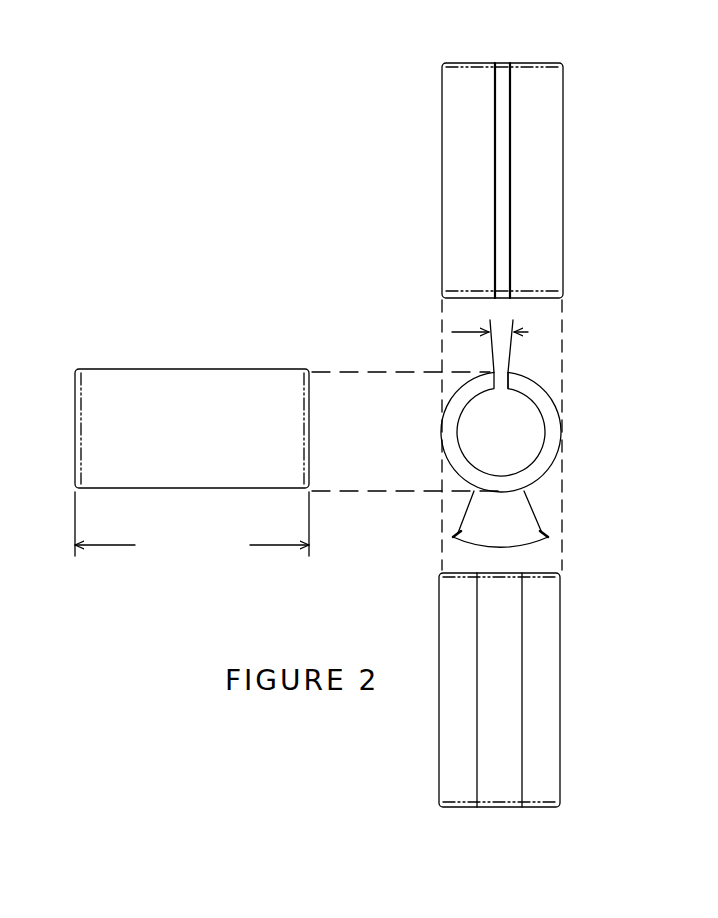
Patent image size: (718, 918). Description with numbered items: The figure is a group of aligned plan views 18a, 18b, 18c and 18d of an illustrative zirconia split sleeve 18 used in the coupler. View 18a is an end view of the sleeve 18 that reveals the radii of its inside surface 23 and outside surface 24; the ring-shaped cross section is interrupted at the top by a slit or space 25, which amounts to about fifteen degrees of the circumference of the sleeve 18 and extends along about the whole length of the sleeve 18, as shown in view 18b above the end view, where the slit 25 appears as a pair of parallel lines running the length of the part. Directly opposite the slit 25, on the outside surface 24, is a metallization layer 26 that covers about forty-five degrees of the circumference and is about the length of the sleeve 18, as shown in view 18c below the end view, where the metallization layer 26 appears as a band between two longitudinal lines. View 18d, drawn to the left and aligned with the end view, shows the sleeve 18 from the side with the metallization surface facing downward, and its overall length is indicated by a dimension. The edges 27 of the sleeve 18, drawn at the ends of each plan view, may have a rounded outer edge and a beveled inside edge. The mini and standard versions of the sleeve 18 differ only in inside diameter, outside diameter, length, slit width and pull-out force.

The zirconia split sleeve 18 is at (561, 187).
The end view 18a is at (584, 433).
The view showing slit 18b is at (597, 133).
The view showing metallization layer 18c is at (578, 676).
The side view 18d is at (176, 351).
The inside surface 23 is at (458, 441).
The outside surface 24 is at (516, 376).
The slit 25 is at (506, 171).
The metallization layer 26 is at (500, 494).
The edges 27 is at (565, 66).